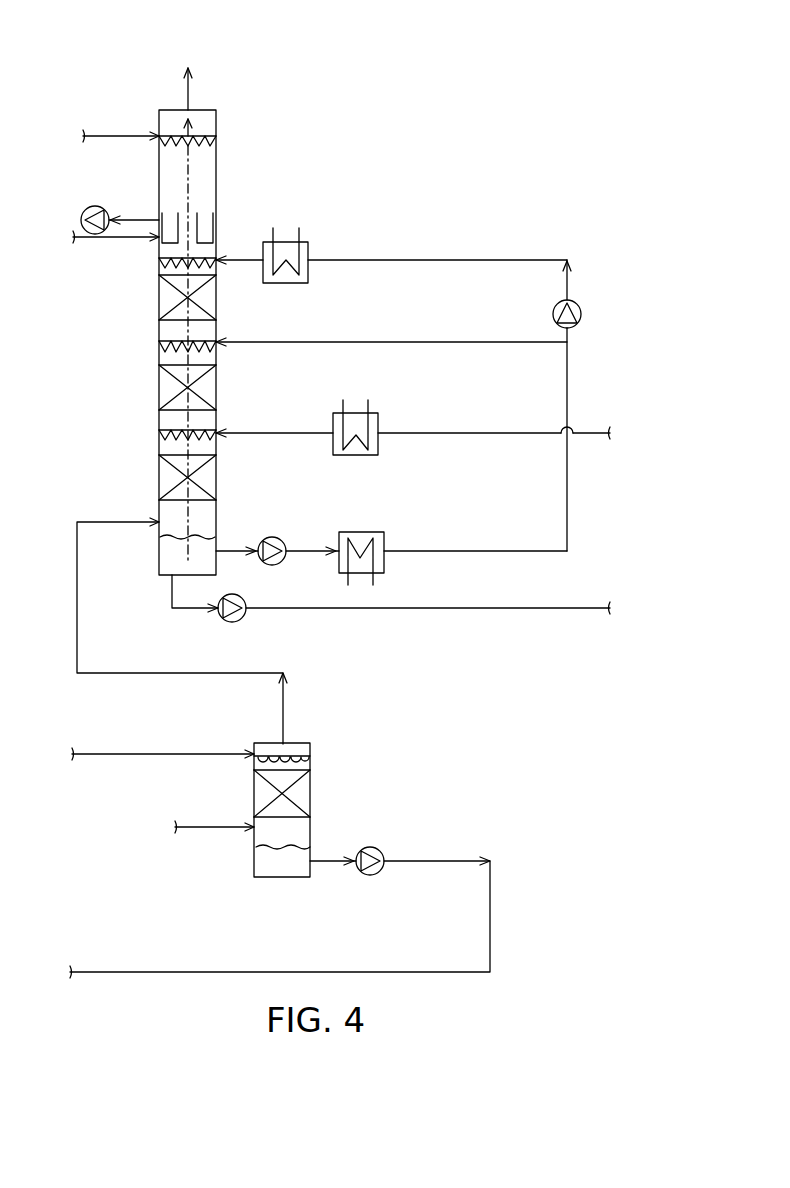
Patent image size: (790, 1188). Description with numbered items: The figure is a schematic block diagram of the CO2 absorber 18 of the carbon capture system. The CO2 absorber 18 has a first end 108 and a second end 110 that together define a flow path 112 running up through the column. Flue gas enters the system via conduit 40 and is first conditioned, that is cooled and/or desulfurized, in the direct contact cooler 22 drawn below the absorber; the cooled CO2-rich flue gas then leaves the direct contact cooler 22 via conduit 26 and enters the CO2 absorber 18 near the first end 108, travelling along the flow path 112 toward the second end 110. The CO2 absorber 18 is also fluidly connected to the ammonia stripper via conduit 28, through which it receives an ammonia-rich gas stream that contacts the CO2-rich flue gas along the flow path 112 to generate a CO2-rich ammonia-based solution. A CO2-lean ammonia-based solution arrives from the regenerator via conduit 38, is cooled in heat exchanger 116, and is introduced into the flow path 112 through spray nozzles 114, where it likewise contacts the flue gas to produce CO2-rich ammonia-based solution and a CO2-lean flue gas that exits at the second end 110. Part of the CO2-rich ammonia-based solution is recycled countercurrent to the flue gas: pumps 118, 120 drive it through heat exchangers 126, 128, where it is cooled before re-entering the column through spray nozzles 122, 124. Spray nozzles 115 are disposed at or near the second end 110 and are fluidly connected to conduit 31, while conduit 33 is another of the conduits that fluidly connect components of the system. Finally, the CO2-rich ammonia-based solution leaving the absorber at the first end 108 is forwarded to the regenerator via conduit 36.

The CO2 absorber 18 is at (156, 45).
The direct contact cooler 22 is at (316, 740).
The conduit 26 is at (74, 604).
The conduit 28 is at (117, 242).
The conduit 31 is at (108, 128).
The conduit 33 is at (140, 210).
The conduit 36 is at (482, 614).
The conduit 38 is at (490, 433).
The conduit 40 is at (182, 826).
The first end 108 is at (150, 570).
The second end 110 is at (234, 112).
The flow path 112 is at (200, 188).
The spray nozzles 114 is at (158, 432).
The spray nozzles 115 is at (216, 137).
The heat exchanger 116 is at (378, 414).
The pump 118 is at (282, 536).
The pump 120 is at (582, 312).
The spray nozzles 122 is at (218, 258).
The spray nozzles 124 is at (158, 342).
The heat exchanger 126 is at (308, 244).
The heat exchanger 128 is at (386, 534).